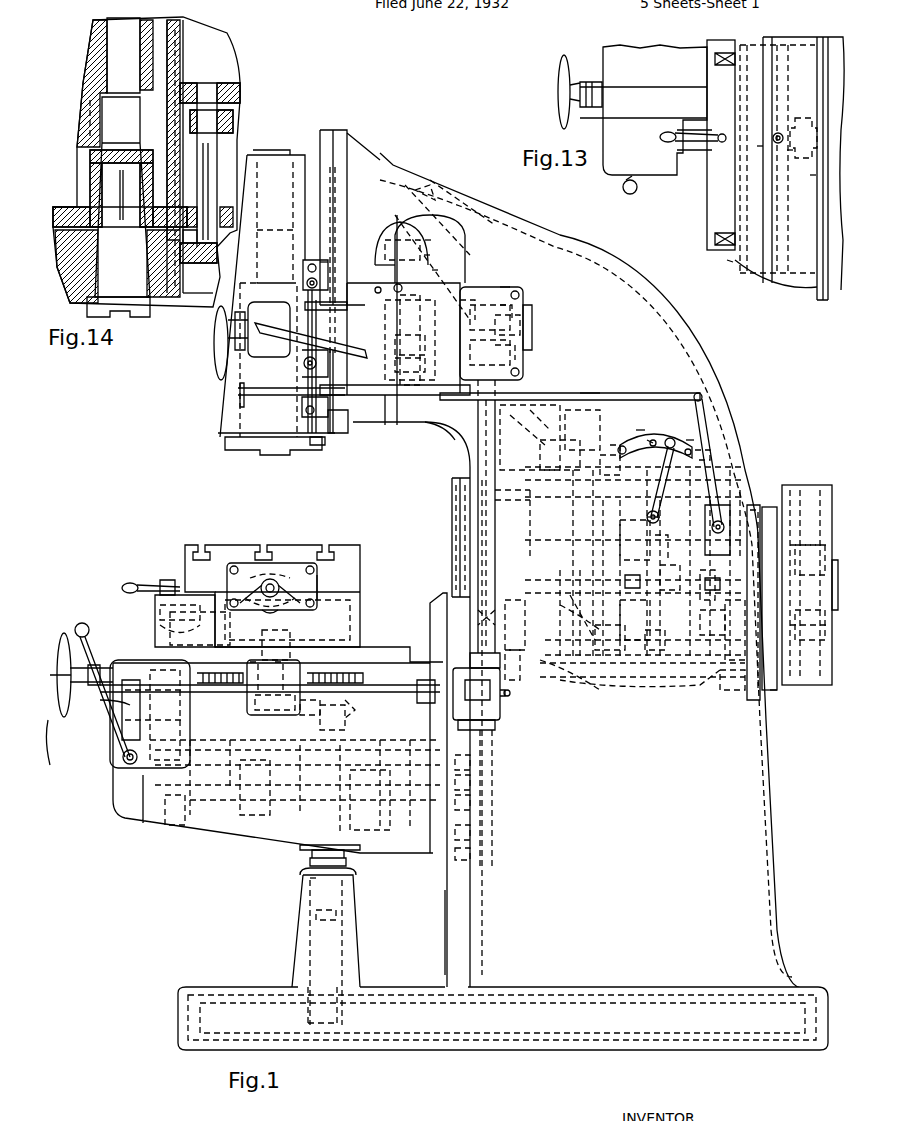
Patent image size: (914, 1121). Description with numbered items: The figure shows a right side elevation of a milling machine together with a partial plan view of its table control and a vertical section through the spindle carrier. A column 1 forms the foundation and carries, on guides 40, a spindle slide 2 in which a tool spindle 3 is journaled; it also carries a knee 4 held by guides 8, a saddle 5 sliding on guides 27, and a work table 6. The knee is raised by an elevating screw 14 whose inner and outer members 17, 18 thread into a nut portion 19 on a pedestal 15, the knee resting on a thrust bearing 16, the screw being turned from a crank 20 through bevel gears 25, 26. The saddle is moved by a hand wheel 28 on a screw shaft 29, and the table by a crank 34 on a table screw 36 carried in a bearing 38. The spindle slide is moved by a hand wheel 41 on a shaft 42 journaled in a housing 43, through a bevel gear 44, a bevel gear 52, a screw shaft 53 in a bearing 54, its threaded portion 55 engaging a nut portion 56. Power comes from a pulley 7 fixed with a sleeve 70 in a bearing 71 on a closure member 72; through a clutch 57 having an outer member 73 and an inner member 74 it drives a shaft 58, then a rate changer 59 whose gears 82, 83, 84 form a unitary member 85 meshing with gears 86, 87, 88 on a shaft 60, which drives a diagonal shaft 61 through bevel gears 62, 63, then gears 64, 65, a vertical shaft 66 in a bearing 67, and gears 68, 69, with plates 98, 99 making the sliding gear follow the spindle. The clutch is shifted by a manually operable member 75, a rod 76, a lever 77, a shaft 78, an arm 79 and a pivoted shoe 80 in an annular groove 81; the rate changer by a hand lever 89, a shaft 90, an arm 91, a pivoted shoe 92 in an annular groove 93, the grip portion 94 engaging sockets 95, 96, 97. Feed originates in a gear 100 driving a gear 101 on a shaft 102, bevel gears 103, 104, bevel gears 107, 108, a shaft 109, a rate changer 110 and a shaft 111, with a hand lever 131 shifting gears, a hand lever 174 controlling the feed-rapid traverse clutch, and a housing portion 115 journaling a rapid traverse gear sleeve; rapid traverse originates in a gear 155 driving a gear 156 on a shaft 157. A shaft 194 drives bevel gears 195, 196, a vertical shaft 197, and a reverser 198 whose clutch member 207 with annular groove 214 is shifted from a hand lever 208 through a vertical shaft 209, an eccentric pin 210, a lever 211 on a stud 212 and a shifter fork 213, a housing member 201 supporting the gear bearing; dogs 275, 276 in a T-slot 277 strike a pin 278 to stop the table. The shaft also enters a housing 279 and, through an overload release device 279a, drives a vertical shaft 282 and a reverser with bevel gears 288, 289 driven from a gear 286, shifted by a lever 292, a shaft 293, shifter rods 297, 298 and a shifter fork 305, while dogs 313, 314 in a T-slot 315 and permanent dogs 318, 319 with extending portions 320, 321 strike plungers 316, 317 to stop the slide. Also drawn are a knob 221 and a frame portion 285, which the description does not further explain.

In FIG. 14, the column 1 is at (190, 290).
In FIG. 1, the column 1 is at (503, 591).
In FIG. 14, the spindle carrier 2 is at (90, 105).
In FIG. 1, the spindle carrier 2 is at (217, 405).
In FIG. 14, the tool spindle 3 is at (138, 317).
In FIG. 1, the tool spindle 3 is at (250, 455).
In FIG. 1, the knee 4 is at (248, 845).
In FIG. 13, the saddle 5 is at (707, 200).
In FIG. 1, the saddle 5 is at (362, 606).
In FIG. 13, the work table 6 is at (768, 287).
In FIG. 1, the work table 6 is at (362, 550).
In FIG. 1, the pulley 7 is at (50, 686).
In FIG. 1, the guides 8 is at (400, 208).
In FIG. 1, the elevating screw 14 is at (305, 870).
In FIG. 1, the pedestal 15 is at (298, 944).
In FIG. 1, the thrust bearing 16 is at (350, 725).
In FIG. 1, the inner screw member 17 is at (308, 858).
In FIG. 1, the outer screw member 18 is at (312, 880).
In FIG. 1, the nut portion 19 is at (312, 915).
In FIG. 1, the crank 20 is at (50, 740).
In FIG. 1, the bevel gear 25 is at (305, 720).
In FIG. 1, the bevel gear 26 is at (355, 712).
In FIG. 1, the guides 27 is at (395, 655).
In FIG. 1, the hand wheel 28 is at (64, 633).
In FIG. 1, the screw shaft 29 is at (200, 693).
In FIG. 1, the crank 34 is at (285, 650).
In FIG. 13, the table screw 36 is at (820, 305).
In FIG. 1, the table screw 36 is at (270, 588).
In FIG. 1, the bearing 38 is at (317, 585).
In FIG. 1, the guides 40 is at (330, 150).
In FIG. 1, the hand wheel 41 is at (205, 362).
In FIG. 1, the shaft 42 is at (305, 302).
In FIG. 1, the housing 43 is at (480, 292).
In FIG. 1, the bevel gear 44 is at (410, 325).
In FIG. 1, the bevel gear 52 is at (432, 240).
In FIG. 1, the screw shaft 53 is at (440, 270).
In FIG. 1, the bearing 54 is at (430, 255).
In FIG. 1, the threaded portion 55 is at (412, 345).
In FIG. 1, the nut portion 56 is at (412, 362).
In FIG. 1, the clutch 57 is at (755, 505).
In FIG. 1, the shaft 58 is at (678, 570).
In FIG. 1, the rate changer 59 is at (668, 545).
In FIG. 1, the shaft 60 is at (622, 452).
In FIG. 1, the diagonal shaft 61 is at (540, 425).
In FIG. 1, the bevel gear 62 is at (595, 425).
In FIG. 1, the bevel gear 63 is at (560, 440).
In FIG. 1, the gear 64 is at (438, 224).
In FIG. 14, the gear 65 is at (215, 85).
In FIG. 1, the gear 65 is at (380, 225).
In FIG. 14, the vertical shaft 66 is at (217, 178).
In FIG. 1, the vertical shaft 66 is at (375, 262).
In FIG. 14, the bearing 67 is at (233, 125).
In FIG. 1, the bearing 67 is at (395, 288).
In FIG. 14, the gear 68 is at (192, 207).
In FIG. 14, the gear 69 is at (62, 207).
In FIG. 1, the sleeve 70 is at (800, 545).
In FIG. 1, the bearing 71 is at (800, 638).
In FIG. 1, the closure member 72 is at (778, 690).
In FIG. 1, the outer clutch member 73 is at (770, 510).
In FIG. 1, the inner clutch member 74 is at (735, 610).
In FIG. 1, the manually operable member 75 is at (250, 400).
In FIG. 1, the rod 76 is at (652, 395).
In FIG. 1, the lever 77 is at (712, 420).
In FIG. 1, the shaft 78 is at (720, 520).
In FIG. 1, the arm 79 is at (706, 570).
In FIG. 1, the pivoted shoe 80 is at (710, 605).
In FIG. 1, the annular groove 81 is at (705, 625).
In FIG. 1, the gear 82 is at (595, 620).
In FIG. 1, the gear 83 is at (612, 660).
In FIG. 1, the gear 84 is at (660, 640).
In FIG. 1, the unitary member 85 is at (630, 632).
In FIG. 1, the gear 86 is at (590, 397).
In FIG. 1, the gear 87 is at (640, 430).
In FIG. 1, the gear 88 is at (690, 440).
In FIG. 1, the hand lever 89 is at (660, 490).
In FIG. 1, the shaft 90 is at (660, 517).
In FIG. 1, the arm 91 is at (635, 540).
In FIG. 1, the pivoted shoe 92 is at (625, 580).
In FIG. 1, the annular groove 93 is at (630, 620).
In FIG. 1, the grip portion 94 is at (655, 440).
In FIG. 1, the socket 95 is at (622, 445).
In FIG. 1, the socket 96 is at (650, 443).
In FIG. 1, the socket 97 is at (688, 452).
In FIG. 14, the plate 98 is at (226, 207).
In FIG. 14, the plate 99 is at (198, 246).
In FIG. 1, the gear 100 is at (494, 560).
In FIG. 1, the gear 101 is at (515, 675).
In FIG. 1, the shaft 102 is at (520, 635).
In FIG. 1, the bevel gear 103 is at (485, 620).
In FIG. 1, the bevel gear 104 is at (440, 612).
In FIG. 1, the bevel gear 107 is at (478, 833).
In FIG. 1, the bevel gear 108 is at (478, 802).
In FIG. 1, the shaft 109 is at (478, 782).
In FIG. 1, the rate changer 110 is at (478, 760).
In FIG. 1, the shaft 111 is at (310, 785).
In FIG. 1, the housing portion 115 is at (478, 855).
In FIG. 1, the hand lever 131 is at (110, 705).
In FIG. 1, the gear 155 is at (752, 500).
In FIG. 1, the gear 156 is at (740, 690).
In FIG. 1, the shaft 157 is at (590, 680).
In FIG. 1, the hand lever 174 is at (86, 634).
In FIG. 1, the shaft 194 is at (412, 703).
In FIG. 1, the bevel gear 195 is at (278, 718).
In FIG. 1, the bevel gear 196 is at (255, 666).
In FIG. 1, the vertical shaft 197 is at (280, 666).
In FIG. 1, the reverser 198 is at (300, 610).
In FIG. 1, the housing member 201 is at (252, 717).
In FIG. 13, the clutch member 207 is at (812, 130).
In FIG. 13, the hand lever 208 is at (666, 142).
In FIG. 1, the hand lever 208 is at (122, 586).
In FIG. 13, the vertical shaft 209 is at (712, 135).
In FIG. 1, the vertical shaft 209 is at (160, 600).
In FIG. 1, the eccentric pin 210 is at (160, 617).
In FIG. 13, the lever 211 is at (760, 148).
In FIG. 1, the lever 211 is at (165, 630).
In FIG. 13, the stud 212 is at (790, 150).
In FIG. 1, the stud 212 is at (222, 625).
In FIG. 13, the shifter fork 213 is at (782, 135).
In FIG. 13, the annular groove 214 is at (812, 175).
In FIG. 13, the hand knob 221 is at (632, 193).
In FIG. 1, the hand knob 221 is at (125, 725).
In FIG. 13, the dog 275 is at (712, 55).
In FIG. 13, the dog 276 is at (712, 240).
In FIG. 13, the T-slot 277 is at (730, 262).
In FIG. 13, the pin 278 is at (722, 130).
In FIG. 1, the pin 278 is at (163, 580).
In FIG. 1, the housing 279 is at (500, 713).
In FIG. 1, the overload release device 279a is at (517, 699).
In FIG. 1, the vertical shaft 282 is at (460, 540).
In FIG. 1, the frame web 285 is at (430, 438).
In FIG. 1, the gear 286 is at (518, 345).
In FIG. 1, the bevel gear 288 is at (466, 295).
In FIG. 1, the bevel gear 289 is at (525, 318).
In FIG. 1, the lever 292 is at (302, 364).
In FIG. 1, the shaft 293 is at (385, 425).
In FIG. 1, the shifter rod 297 is at (420, 392).
In FIG. 1, the shifter rod 298 is at (512, 298).
In FIG. 1, the shifter fork 305 is at (505, 285).
In FIG. 1, the dog 313 is at (306, 280).
In FIG. 1, the dog 314 is at (303, 403).
In FIG. 1, the T-slot 315 is at (305, 413).
In FIG. 1, the plunger 316 is at (330, 290).
In FIG. 1, the plunger 317 is at (265, 340).
In FIG. 1, the dog 318 is at (307, 265).
In FIG. 1, the dog 319 is at (318, 445).
In FIG. 1, the extending portion 320 is at (322, 262).
In FIG. 1, the extending portion 321 is at (340, 423).